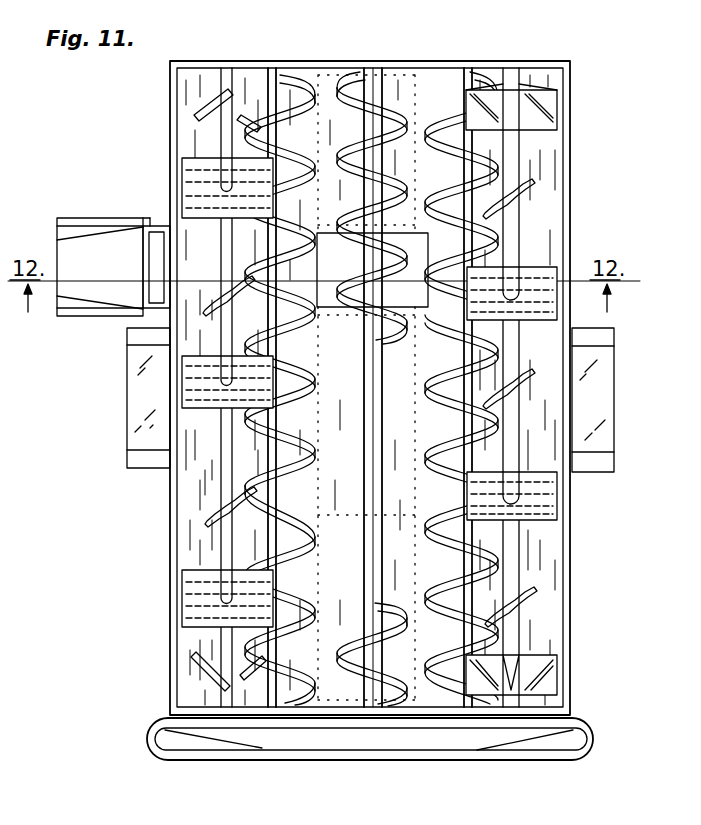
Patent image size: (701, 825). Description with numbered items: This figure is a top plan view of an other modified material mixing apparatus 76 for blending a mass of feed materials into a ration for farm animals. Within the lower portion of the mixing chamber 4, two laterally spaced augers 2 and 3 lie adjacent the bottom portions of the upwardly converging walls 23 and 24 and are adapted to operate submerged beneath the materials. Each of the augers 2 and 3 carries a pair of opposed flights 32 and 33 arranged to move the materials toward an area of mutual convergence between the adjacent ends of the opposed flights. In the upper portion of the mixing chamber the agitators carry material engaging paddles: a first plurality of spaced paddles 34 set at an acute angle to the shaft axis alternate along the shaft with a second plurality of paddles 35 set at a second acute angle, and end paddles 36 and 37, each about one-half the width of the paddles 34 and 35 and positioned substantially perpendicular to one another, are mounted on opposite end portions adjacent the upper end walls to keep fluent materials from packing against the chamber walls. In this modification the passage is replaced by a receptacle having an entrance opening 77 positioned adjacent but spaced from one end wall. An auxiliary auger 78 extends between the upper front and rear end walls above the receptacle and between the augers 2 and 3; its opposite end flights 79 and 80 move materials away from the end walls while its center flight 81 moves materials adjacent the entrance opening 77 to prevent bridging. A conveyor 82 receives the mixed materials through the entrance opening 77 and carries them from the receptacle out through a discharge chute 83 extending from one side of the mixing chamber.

The auger 2 is at (287, 502).
The auger 3 is at (457, 490).
The mixing chamber 4 is at (423, 100).
The upwardly converging wall 23 is at (322, 696).
The upwardly converging wall 24 is at (418, 696).
The flight 32 is at (298, 172).
The flight 33 is at (304, 540).
The paddle 34 is at (548, 514).
The paddle 35 is at (537, 166).
The end paddle 36 is at (205, 113).
The end paddle 37 is at (548, 680).
The modified material mixing apparatus 76 is at (603, 88).
The entrance opening 77 is at (410, 296).
The auxiliary auger 78 is at (377, 416).
The end flight 79 is at (402, 124).
The end flight 80 is at (386, 627).
The center flight 81 is at (346, 293).
The conveyor 82 is at (164, 230).
The discharge chute 83 is at (78, 298).